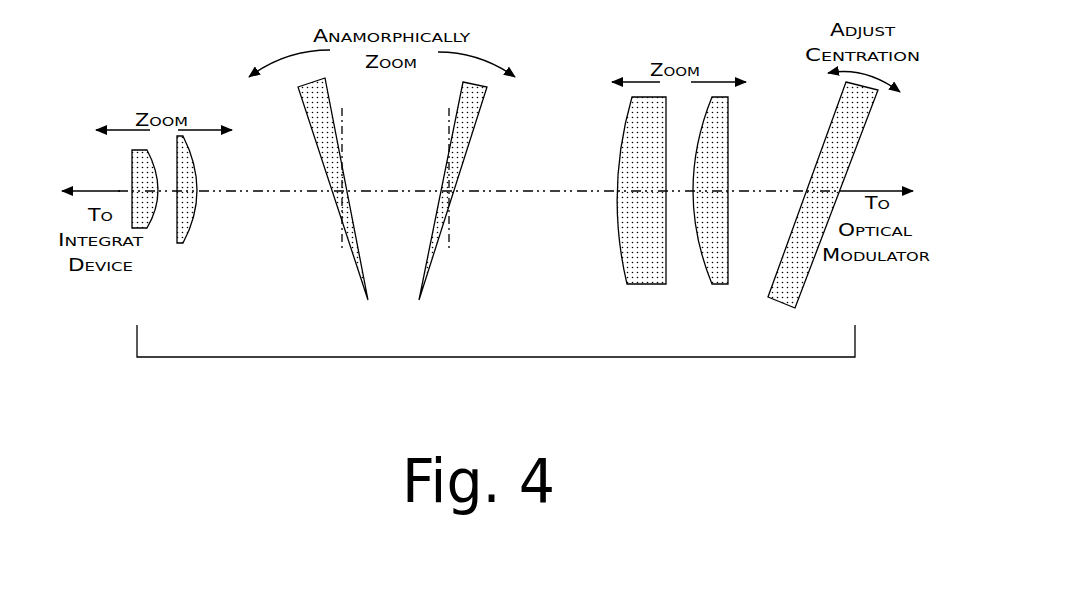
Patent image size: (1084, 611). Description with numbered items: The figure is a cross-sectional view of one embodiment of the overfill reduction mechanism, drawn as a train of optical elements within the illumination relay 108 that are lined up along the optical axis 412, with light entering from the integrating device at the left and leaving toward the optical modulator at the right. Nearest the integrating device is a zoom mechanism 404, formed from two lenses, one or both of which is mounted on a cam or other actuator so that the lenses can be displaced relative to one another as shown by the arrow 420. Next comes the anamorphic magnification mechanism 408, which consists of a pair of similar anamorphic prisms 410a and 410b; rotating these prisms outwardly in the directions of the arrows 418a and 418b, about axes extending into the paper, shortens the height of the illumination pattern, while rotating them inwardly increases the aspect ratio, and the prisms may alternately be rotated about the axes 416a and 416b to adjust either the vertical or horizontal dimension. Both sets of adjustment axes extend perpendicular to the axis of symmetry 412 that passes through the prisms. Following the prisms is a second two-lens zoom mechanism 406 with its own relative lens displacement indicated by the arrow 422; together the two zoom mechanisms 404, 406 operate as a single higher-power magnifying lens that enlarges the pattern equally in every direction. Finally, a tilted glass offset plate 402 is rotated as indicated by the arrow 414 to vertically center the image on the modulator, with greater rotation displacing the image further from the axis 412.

The illumination relay 108 is at (457, 357).
The glass offset plate 402 is at (776, 309).
The zoom mechanism 404 is at (185, 252).
The zoom mechanism 406 is at (638, 291).
The anamorphic magnification mechanism 408 is at (386, 178).
The anamorphic prism 410a is at (358, 276).
The anamorphic prism 410b is at (434, 258).
The optical axis 412 is at (507, 191).
The arrow indicating rotation of the glass offset plate 414 is at (843, 78).
The rotation axis of the first anamorphic prism 416a is at (343, 137).
The rotation axis of the second anamorphic prism 416b is at (450, 133).
The arrow indicating rotation of the first anamorphic prism 418a is at (302, 53).
The arrow indicating rotation of the second anamorphic prism 418b is at (480, 53).
The arrow indicating relative displacement of zoom lenses 420 is at (206, 131).
The arrow indicating relative displacement of zoom lenses 422 is at (637, 80).